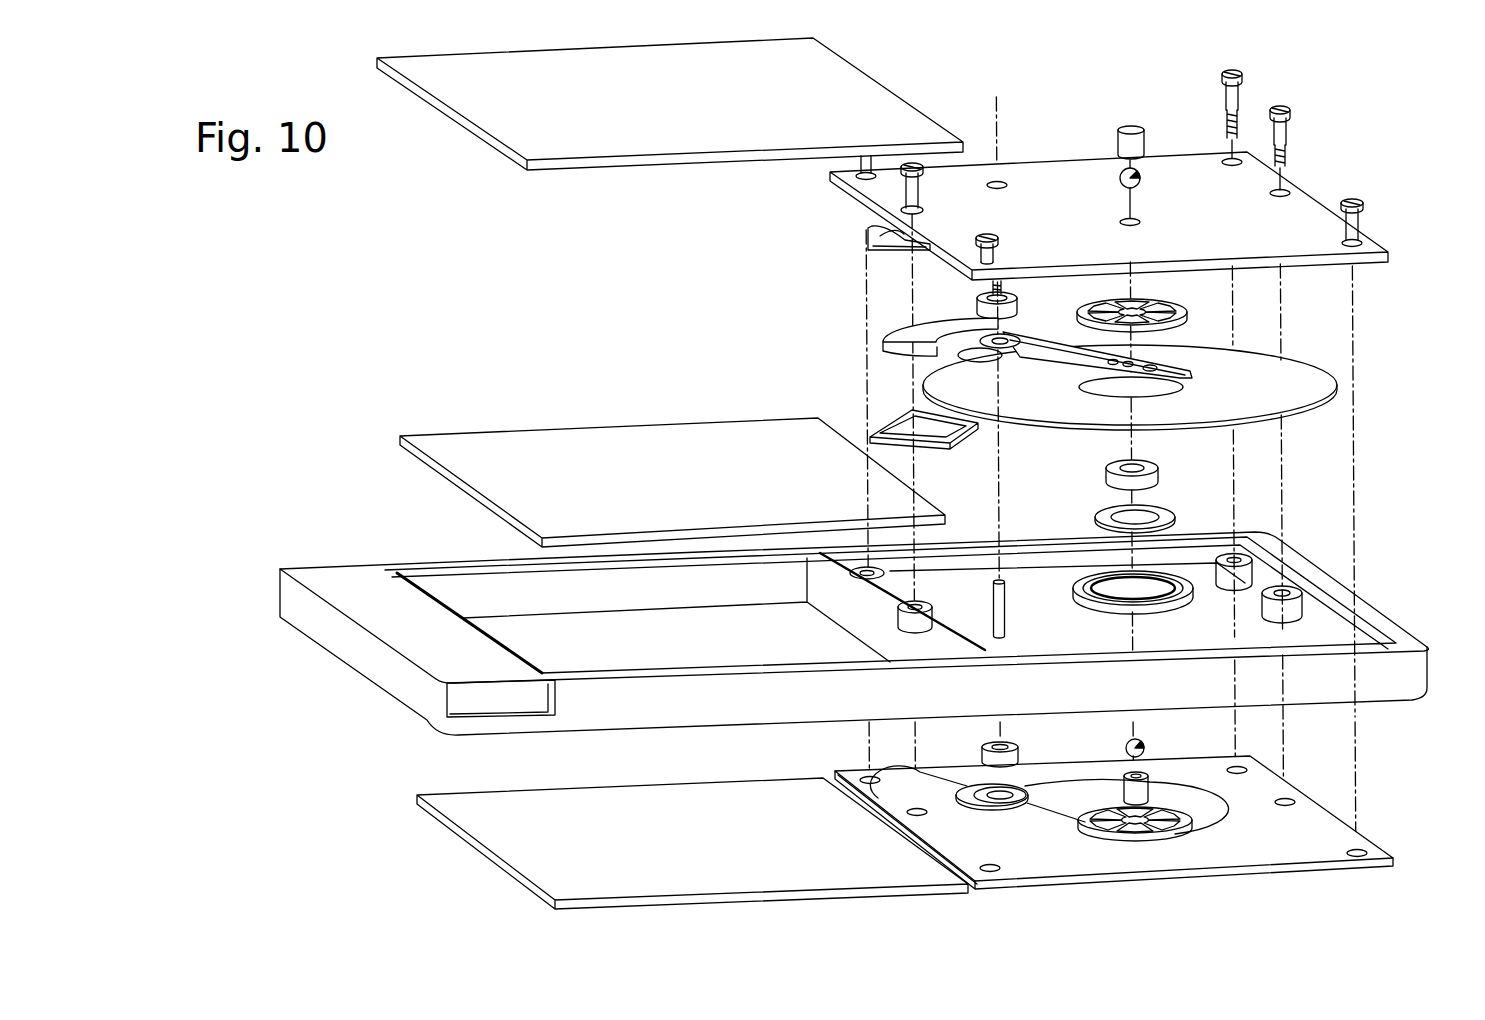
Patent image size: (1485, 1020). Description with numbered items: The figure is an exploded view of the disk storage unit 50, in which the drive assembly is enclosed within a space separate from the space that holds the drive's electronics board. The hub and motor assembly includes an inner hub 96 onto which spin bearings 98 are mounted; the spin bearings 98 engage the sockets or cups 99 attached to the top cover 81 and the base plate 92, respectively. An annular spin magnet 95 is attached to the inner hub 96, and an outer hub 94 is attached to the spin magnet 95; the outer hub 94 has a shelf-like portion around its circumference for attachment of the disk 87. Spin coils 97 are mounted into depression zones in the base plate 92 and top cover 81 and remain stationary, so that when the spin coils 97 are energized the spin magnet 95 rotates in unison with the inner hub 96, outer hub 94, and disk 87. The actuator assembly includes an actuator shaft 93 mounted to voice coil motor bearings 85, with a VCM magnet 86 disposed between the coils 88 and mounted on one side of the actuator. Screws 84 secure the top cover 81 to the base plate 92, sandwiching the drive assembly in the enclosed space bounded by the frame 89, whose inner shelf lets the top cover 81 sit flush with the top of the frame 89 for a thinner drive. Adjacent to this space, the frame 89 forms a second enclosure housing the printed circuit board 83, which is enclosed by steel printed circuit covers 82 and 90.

The disk storage unit 50 is at (447, 278).
The top cover 81 is at (852, 190).
The printed circuit cover 82 is at (620, 165).
The printed circuit board 83 is at (513, 430).
The screws 84 is at (1360, 205).
The voice coil motor bearings 85 is at (975, 302).
The VCM magnet 86 is at (897, 332).
The disk 87 is at (1092, 433).
The coils 88 is at (937, 443).
The frame 89 is at (345, 562).
The printed circuit cover 90 is at (467, 792).
The base plate 92 is at (1377, 843).
The actuator shaft 93 is at (1010, 617).
The outer hub 94 is at (1155, 610).
The spin magnet 95 is at (1153, 505).
The inner hub 96 is at (1158, 474).
The spin coils 97 is at (1143, 298).
The spin bearings 98 is at (1140, 183).
The sockets or cups 99 is at (1147, 138).